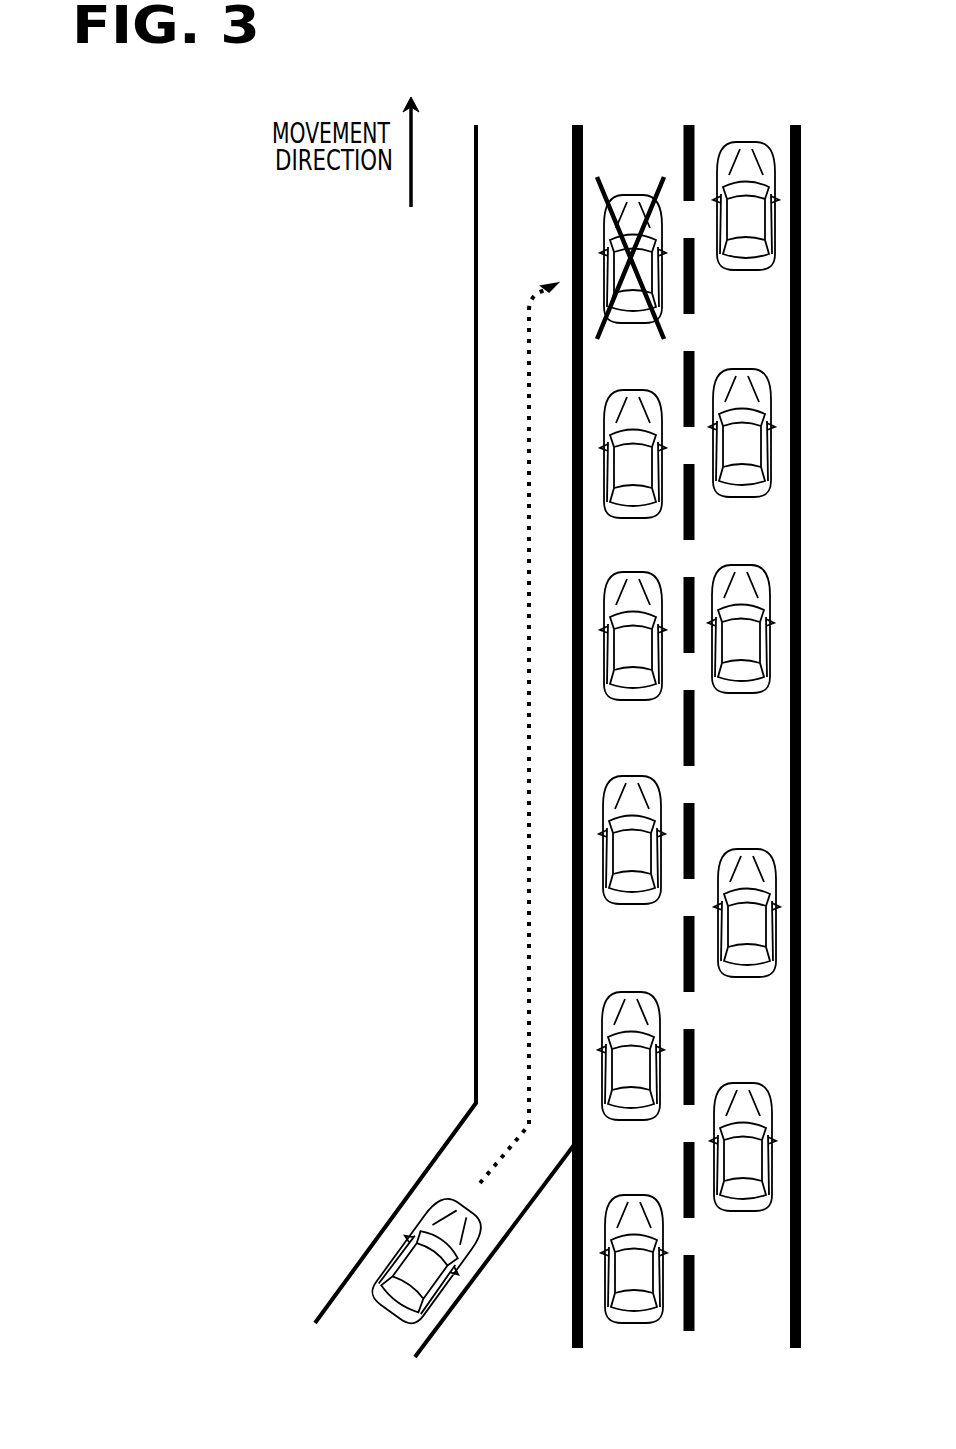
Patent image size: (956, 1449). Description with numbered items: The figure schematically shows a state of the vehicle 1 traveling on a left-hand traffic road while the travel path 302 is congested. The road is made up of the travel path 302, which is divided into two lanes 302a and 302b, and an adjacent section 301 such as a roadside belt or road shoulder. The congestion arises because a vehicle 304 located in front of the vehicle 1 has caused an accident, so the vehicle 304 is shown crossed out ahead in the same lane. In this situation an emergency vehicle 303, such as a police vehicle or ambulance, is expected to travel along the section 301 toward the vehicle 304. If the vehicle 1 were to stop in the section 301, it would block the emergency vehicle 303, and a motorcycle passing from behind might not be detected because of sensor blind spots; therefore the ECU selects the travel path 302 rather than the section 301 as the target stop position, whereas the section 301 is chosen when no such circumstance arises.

The vehicle 1 is at (632, 905).
The section 301 is at (567, 118).
The travel path 302 is at (797, 65).
The lane 302a is at (688, 118).
The lane 302b is at (797, 118).
The emergency vehicle 303 is at (400, 1257).
The vehicle 304 is at (604, 226).